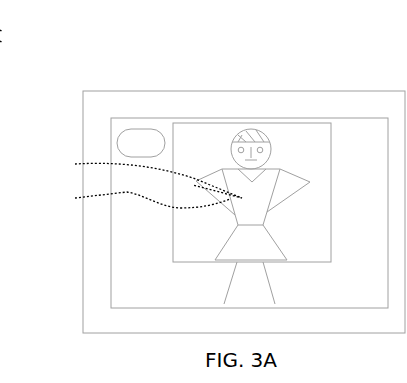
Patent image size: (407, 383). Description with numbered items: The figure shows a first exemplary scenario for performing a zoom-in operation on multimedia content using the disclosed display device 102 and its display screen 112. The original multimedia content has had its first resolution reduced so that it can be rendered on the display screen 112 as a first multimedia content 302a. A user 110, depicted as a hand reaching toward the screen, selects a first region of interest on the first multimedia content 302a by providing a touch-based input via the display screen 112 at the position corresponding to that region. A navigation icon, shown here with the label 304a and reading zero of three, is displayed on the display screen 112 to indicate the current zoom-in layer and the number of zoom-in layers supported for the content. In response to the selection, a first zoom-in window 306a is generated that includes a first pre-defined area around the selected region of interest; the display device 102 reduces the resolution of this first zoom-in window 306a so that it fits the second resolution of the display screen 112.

The display device 102 is at (315, 90).
The display screen 112 is at (225, 118).
The user 110 is at (99, 161).
The first multimedia content 302a is at (152, 286).
The counter indicator 304a is at (133, 127).
The first zoom-in window 306a is at (252, 213).